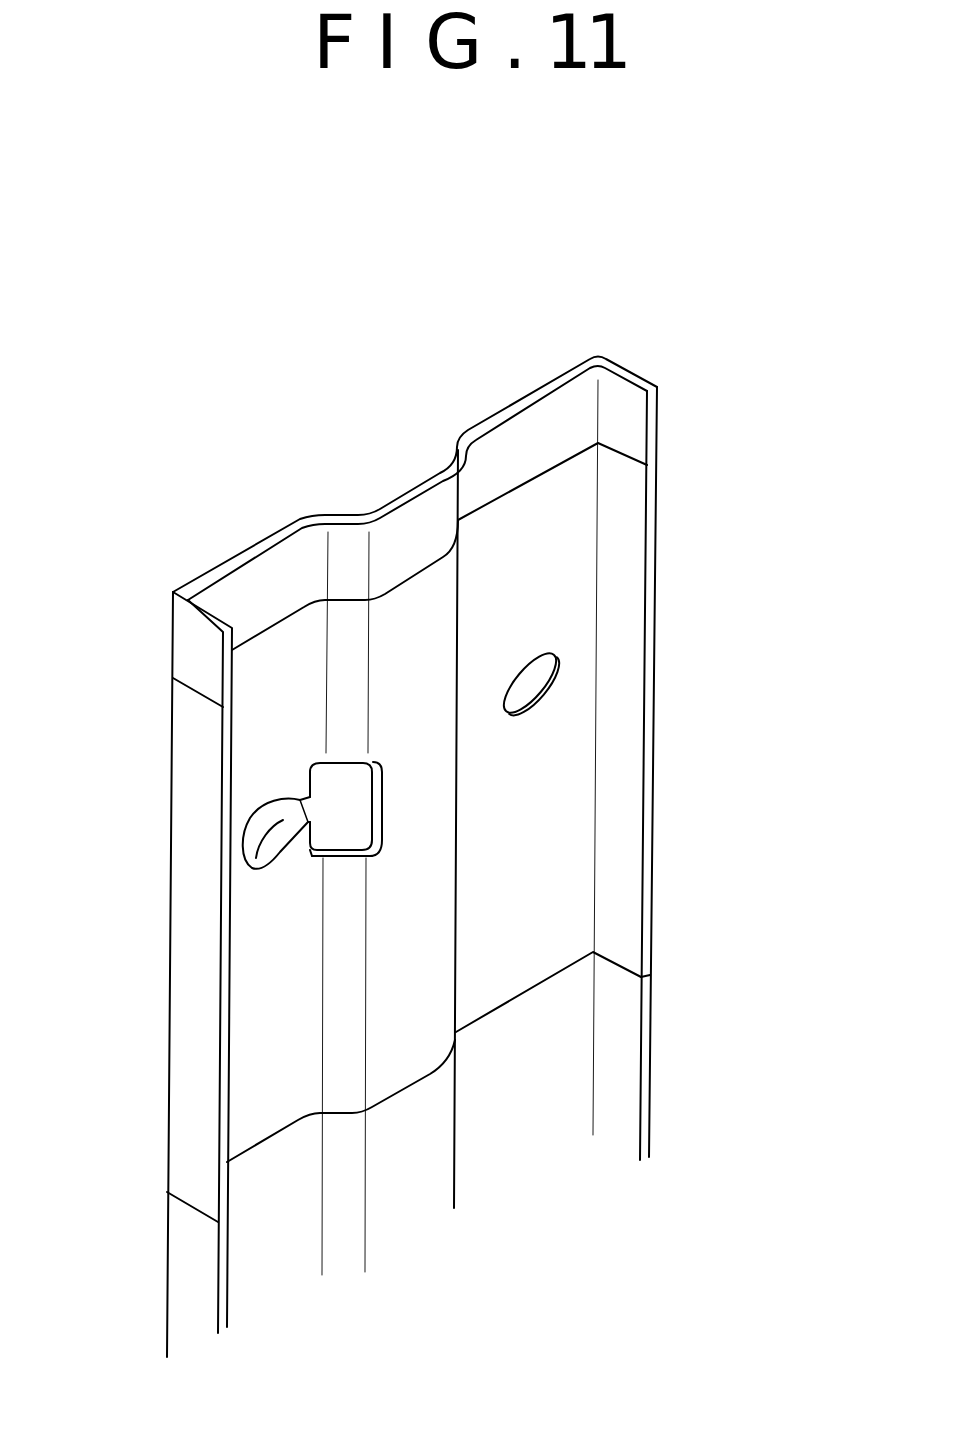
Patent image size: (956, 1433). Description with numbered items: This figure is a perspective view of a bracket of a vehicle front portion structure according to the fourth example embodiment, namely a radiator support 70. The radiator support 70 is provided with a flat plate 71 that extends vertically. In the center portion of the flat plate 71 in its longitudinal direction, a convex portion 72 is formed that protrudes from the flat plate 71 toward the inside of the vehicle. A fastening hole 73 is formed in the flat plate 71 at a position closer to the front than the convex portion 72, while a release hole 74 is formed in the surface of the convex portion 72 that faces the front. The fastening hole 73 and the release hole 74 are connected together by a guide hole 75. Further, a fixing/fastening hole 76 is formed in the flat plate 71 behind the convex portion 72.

The radiator support 70 is at (607, 281).
The flat plate 71 is at (250, 600).
The convex portion 72 is at (405, 540).
The fastening hole 73 is at (262, 844).
The release hole 74 is at (383, 805).
The guide hole 75 is at (335, 858).
The fixing/fastening hole 76 is at (535, 713).